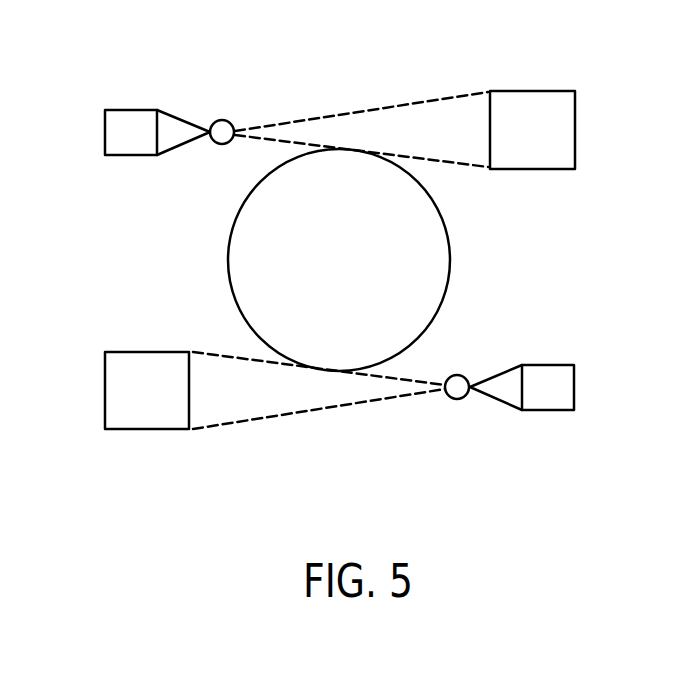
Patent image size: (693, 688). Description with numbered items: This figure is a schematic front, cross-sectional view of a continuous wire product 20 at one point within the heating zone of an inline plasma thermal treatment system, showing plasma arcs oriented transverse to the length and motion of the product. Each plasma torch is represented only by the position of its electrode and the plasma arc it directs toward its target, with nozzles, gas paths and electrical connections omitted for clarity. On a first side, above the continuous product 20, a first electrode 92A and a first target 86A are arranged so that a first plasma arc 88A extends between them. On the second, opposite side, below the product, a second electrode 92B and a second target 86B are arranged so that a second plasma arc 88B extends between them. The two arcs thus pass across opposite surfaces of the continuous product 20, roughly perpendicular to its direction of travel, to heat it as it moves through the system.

The continuous product 20 is at (325, 275).
The target 86A is at (575, 130).
The target 86B is at (145, 429).
The first plasma arc 88A is at (409, 128).
The second plasma arc 88B is at (283, 392).
The first electrode 92A is at (171, 110).
The second electrode 92B is at (508, 407).